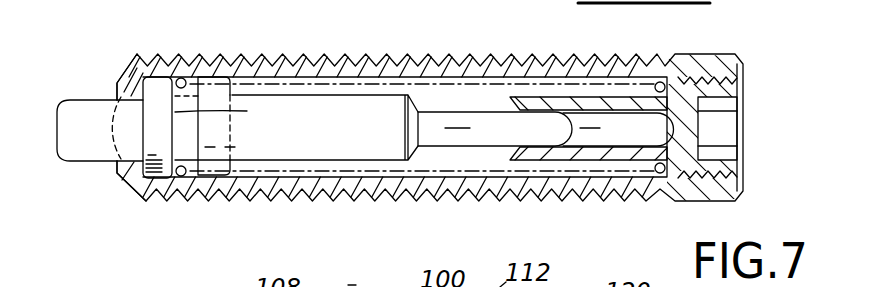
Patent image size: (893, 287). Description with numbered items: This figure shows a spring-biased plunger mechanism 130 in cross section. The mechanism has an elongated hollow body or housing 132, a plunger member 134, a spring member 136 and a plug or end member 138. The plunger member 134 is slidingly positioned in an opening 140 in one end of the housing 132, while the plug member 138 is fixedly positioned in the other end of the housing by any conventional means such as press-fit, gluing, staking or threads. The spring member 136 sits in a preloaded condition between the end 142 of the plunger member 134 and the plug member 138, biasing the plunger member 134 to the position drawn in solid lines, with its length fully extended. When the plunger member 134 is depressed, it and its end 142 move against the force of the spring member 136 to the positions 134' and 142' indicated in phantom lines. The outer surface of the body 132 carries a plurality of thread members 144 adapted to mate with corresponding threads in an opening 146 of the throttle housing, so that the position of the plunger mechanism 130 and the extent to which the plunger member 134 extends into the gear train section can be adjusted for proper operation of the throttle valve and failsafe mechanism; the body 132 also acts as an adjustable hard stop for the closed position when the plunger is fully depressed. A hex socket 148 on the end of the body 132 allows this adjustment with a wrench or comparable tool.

The plunger mechanism 130 is at (118, 42).
The housing 132 is at (662, 60).
The plunger member 134 is at (80, 153).
The depressed position of plunger member 134' is at (79, 105).
The spring member 136 is at (258, 84).
The plug member 138 is at (727, 90).
The opening 140 is at (115, 147).
The end of plunger member 142 is at (296, 127).
The depressed position of plunger member end 142' is at (256, 126).
The thread members 144 is at (407, 55).
The opening 146 is at (546, 128).
The hex socket 148 is at (733, 132).